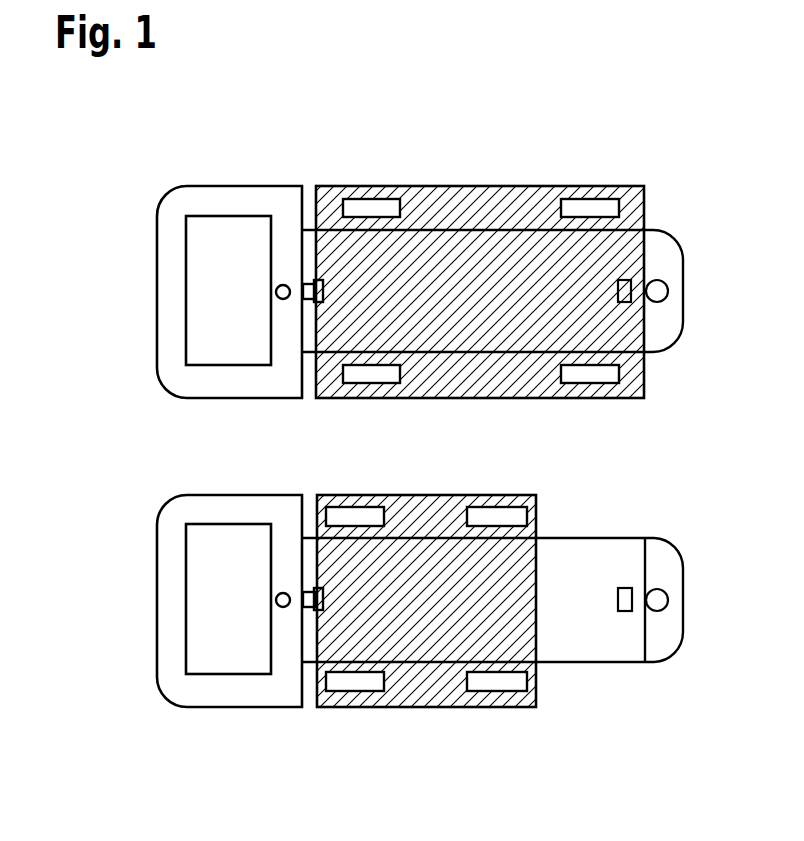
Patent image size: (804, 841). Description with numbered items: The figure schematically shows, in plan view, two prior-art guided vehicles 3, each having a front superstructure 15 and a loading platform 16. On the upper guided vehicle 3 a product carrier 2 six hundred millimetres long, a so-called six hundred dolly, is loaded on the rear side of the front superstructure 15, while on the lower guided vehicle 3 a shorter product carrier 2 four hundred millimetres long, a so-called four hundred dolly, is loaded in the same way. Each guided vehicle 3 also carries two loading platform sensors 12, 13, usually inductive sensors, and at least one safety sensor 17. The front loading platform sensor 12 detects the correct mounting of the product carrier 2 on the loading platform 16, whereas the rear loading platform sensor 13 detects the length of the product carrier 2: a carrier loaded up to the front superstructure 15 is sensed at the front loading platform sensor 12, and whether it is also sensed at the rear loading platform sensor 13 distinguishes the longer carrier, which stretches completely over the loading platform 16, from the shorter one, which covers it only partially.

The guided vehicle 3 is at (103, 203).
The front superstructure 15 is at (229, 195).
The front loading platform sensor 12 is at (280, 297).
The product carrier 2 is at (519, 195).
The loading platform 16 is at (632, 245).
The safety sensor 17 is at (657, 291).
The rear loading platform sensor 13 is at (625, 303).